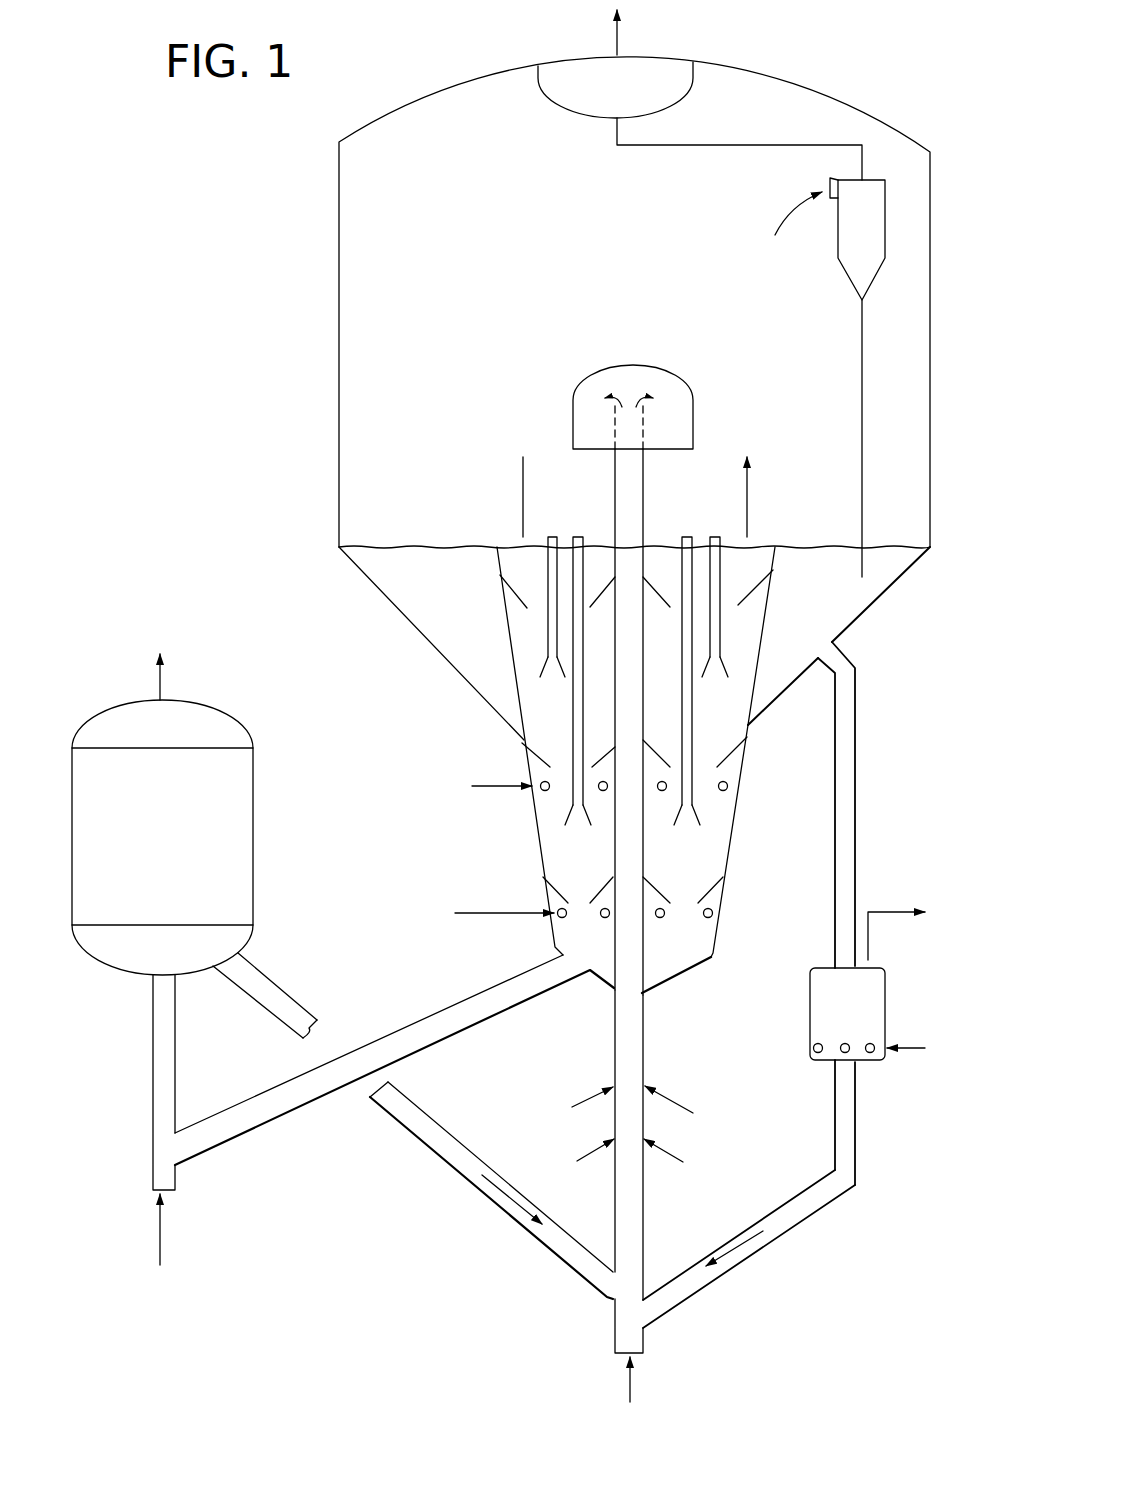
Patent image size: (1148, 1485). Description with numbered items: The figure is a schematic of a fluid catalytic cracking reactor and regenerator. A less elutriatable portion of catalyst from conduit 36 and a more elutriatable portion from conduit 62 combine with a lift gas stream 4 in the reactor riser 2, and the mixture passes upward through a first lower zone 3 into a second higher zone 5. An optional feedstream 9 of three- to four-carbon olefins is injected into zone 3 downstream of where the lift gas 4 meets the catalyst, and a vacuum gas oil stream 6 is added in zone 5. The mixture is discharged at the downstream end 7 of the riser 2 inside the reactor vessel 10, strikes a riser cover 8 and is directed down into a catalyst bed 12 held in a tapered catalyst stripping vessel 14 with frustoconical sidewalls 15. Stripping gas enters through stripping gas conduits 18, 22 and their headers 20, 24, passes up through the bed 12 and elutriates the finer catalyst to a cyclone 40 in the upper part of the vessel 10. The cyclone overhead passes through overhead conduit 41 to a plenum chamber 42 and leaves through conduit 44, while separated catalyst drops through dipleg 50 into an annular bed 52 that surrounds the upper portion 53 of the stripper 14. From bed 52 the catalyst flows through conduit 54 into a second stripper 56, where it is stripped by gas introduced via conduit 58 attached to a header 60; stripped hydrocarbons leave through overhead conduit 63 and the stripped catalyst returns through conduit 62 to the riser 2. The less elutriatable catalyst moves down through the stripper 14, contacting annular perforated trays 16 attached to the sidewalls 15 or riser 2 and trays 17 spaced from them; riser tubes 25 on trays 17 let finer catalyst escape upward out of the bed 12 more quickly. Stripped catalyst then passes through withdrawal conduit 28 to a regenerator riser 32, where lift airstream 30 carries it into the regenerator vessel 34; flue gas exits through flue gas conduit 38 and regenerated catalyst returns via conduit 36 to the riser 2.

The fluid catalytic cracking reactor riser 2 is at (614, 1012).
The first lower zone 3 is at (643, 1240).
The lift gas stream 4 is at (632, 1390).
The second higher zone 5 is at (643, 1017).
The vacuum gas oil stream 6 is at (597, 1094).
The downstream end of the riser 7 is at (645, 487).
The riser cover 8 is at (597, 372).
The optional feedstream 9 is at (580, 1158).
The reactor vessel 10 is at (338, 372).
The catalyst bed 12 is at (730, 720).
The tapered catalyst stripping vessel 14 is at (735, 817).
The frustoconical sidewalls 15 is at (741, 772).
The perforated trays 16 is at (540, 752).
The trays 17 is at (540, 676).
The stripping gas conduit 18 is at (466, 912).
The header 20 is at (560, 920).
The stripping gas conduit 22 is at (488, 786).
The upper distribution holes 24 is at (548, 792).
The riser tubes 25 is at (578, 537).
The withdrawal conduit 28 is at (224, 1133).
The lift airstream 30 is at (162, 1240).
The regenerator riser 32 is at (153, 1097).
The regenerator vessel 34 is at (253, 855).
The conduit 36 is at (427, 1132).
The flue gas conduit 38 is at (162, 683).
The cyclone 40 is at (885, 235).
The cyclone overhead conduit 41 is at (677, 145).
The plenum chamber 42 is at (577, 113).
The conduit 44 is at (618, 48).
The dipleg 50 is at (862, 410).
The annular bed 52 is at (820, 626).
The upper portion of the stripper 53 is at (509, 628).
The conduit 54 is at (856, 757).
The second stripper 56 is at (810, 1012).
The conduit 58 is at (903, 1053).
The header 60 is at (868, 1044).
The conduit 62 is at (768, 1244).
The overhead conduit 63 is at (898, 911).